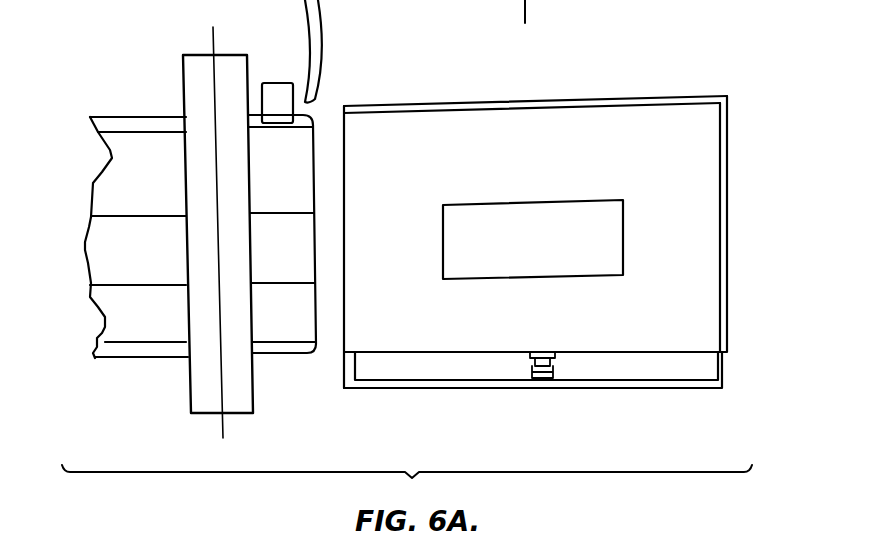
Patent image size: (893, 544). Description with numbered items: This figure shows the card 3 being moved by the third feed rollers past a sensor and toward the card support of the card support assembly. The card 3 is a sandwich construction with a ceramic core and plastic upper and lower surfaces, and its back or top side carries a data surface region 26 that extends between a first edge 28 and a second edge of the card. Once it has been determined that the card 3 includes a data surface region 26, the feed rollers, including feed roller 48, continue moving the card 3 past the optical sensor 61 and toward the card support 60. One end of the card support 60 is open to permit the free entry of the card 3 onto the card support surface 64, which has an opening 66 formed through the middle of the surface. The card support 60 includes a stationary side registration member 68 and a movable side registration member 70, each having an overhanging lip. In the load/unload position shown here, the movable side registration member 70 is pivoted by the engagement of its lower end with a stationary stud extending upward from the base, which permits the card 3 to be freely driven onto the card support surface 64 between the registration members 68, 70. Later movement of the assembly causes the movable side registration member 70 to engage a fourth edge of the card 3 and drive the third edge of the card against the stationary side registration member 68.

The card 3 is at (66, 232).
The data surface region 26 is at (163, 183).
The first edge 28 is at (318, 325).
The feed roller 48 is at (175, 390).
The optical sensor 61 is at (279, 82).
The card support 60 is at (738, 150).
The stationary side registration member 68 is at (688, 97).
The card support surface 64 is at (700, 307).
The opening 66 is at (623, 226).
The movable side registration member 70 is at (642, 400).